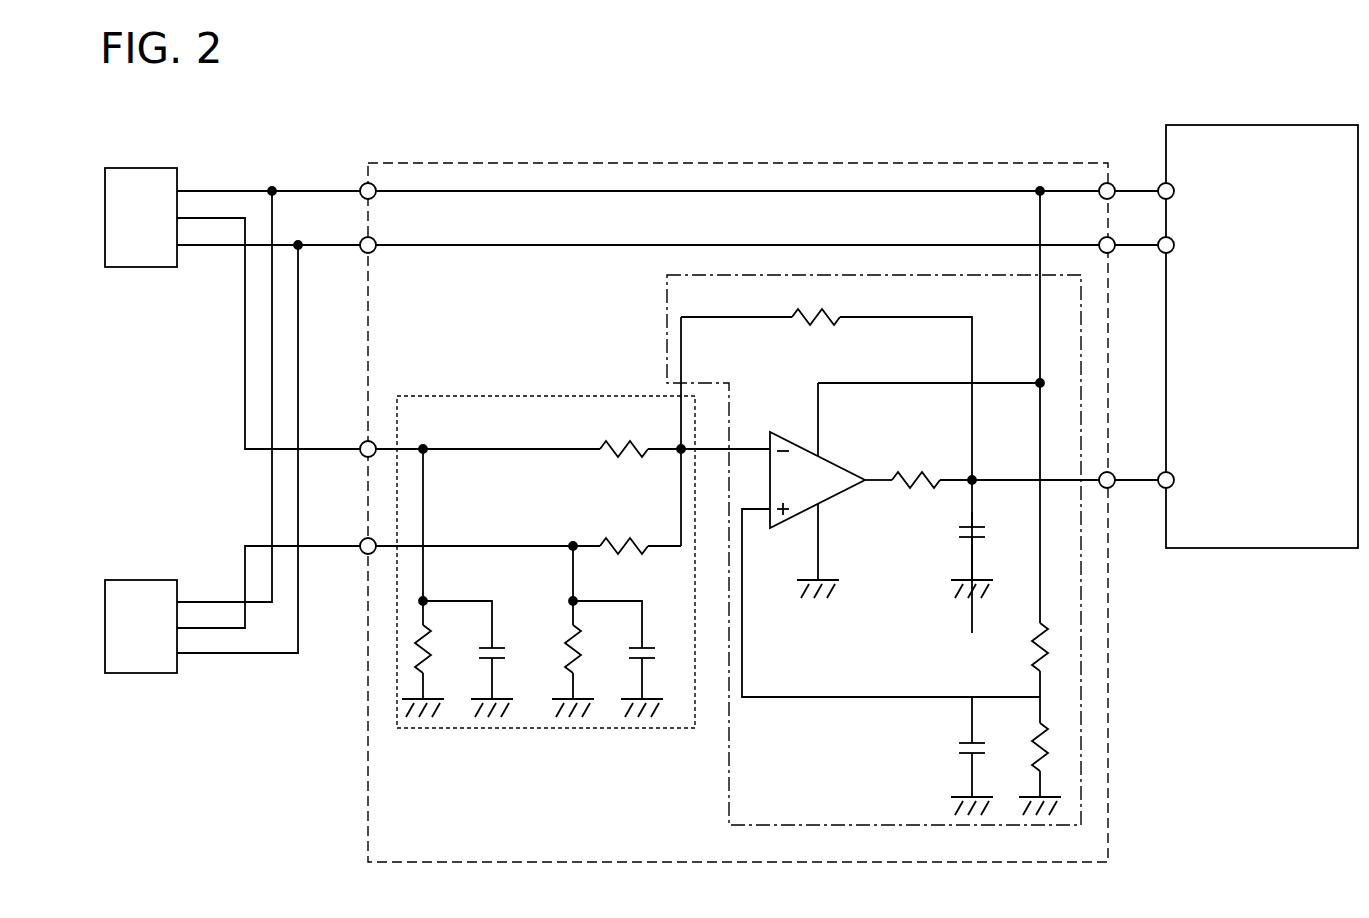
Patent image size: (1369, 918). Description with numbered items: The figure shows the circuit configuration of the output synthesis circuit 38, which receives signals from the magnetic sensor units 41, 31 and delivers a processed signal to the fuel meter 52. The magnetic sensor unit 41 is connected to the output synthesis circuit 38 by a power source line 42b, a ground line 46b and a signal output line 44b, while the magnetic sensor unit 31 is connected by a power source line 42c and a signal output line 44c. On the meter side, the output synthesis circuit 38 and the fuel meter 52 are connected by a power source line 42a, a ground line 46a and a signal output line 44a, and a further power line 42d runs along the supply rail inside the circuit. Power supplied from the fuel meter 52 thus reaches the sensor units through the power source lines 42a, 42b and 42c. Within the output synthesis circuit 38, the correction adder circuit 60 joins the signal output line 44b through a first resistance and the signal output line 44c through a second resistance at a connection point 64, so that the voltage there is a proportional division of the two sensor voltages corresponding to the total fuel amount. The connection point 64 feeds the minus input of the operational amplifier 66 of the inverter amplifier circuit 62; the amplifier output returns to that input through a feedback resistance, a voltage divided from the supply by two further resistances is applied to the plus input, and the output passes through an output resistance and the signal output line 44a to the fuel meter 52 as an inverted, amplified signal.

The magnetic sensor unit 31 is at (147, 580).
The output synthesis circuit 38 is at (838, 162).
The magnetic sensor unit 41 is at (148, 168).
The power source line 42a is at (1128, 190).
The power source line 42b is at (323, 188).
The power source line 42c is at (272, 480).
The power supply line 42d is at (957, 190).
The signal output line 44a is at (1135, 488).
The signal output line 44b is at (245, 375).
The signal output line 44c is at (338, 548).
The ground line 46a is at (1135, 250).
The ground line 46b is at (253, 243).
The fuel meter 52 is at (1310, 125).
The correction adder circuit 60 is at (590, 393).
The inverter amplifier circuit 62 is at (970, 273).
The connection point 64 is at (681, 452).
The operational amplifier 66 is at (789, 522).